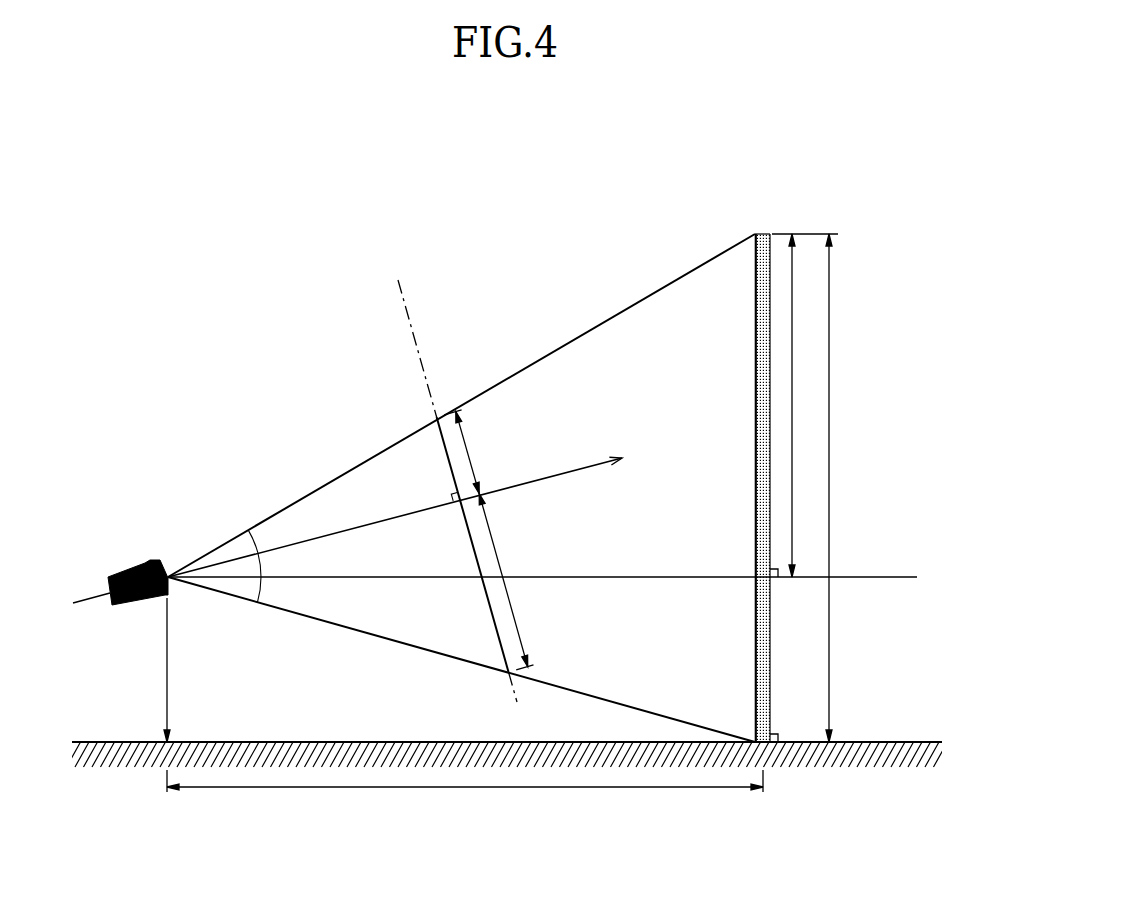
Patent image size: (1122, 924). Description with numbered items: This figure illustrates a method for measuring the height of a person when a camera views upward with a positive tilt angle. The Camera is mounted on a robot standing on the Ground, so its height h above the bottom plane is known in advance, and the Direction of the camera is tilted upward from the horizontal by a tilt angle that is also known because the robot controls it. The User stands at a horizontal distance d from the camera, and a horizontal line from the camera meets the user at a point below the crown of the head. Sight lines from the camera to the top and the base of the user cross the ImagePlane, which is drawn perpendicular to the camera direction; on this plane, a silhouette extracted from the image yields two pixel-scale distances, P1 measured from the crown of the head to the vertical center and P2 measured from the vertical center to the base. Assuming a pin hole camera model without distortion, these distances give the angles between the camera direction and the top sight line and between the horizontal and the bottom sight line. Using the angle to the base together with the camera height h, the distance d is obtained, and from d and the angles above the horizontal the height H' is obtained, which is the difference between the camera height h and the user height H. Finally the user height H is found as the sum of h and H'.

The user height H is at (811, 488).
The height difference H' is at (804, 405).
The camera height h is at (176, 670).
The distance from camera to user d is at (465, 790).
The pixel-scale distance from crown of head to vertical center P1 is at (475, 453).
The pixel-scale distance from vertical center to base P2 is at (503, 580).
The user User is at (763, 472).
The bottom plane Ground is at (503, 738).
The camera Camera is at (120, 582).
The direction of camera Direction is at (455, 503).
The image plane ImagePlane is at (438, 477).